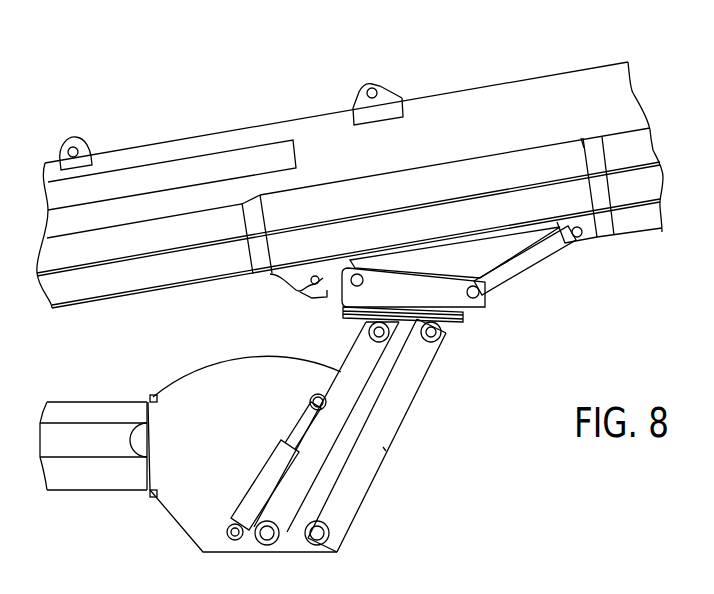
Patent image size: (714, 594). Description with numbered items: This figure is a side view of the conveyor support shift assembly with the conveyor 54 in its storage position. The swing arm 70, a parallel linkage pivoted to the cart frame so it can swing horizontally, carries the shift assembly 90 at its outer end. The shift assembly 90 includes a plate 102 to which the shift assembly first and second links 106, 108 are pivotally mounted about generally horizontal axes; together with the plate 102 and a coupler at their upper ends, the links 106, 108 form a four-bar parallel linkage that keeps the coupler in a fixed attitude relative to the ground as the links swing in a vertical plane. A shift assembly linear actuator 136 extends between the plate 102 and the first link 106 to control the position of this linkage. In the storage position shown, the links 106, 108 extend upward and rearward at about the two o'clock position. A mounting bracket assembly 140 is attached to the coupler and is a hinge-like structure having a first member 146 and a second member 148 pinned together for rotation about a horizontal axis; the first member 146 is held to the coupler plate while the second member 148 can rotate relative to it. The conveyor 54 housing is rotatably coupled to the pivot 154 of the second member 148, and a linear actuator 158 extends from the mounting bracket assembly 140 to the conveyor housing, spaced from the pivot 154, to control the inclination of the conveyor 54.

The conveyor 54 is at (497, 95).
The swing arm 70 is at (75, 498).
The shift assembly 90 is at (377, 508).
The plate 102 is at (205, 387).
The shift assembly first link 106 is at (336, 368).
The shift assembly second link 108 is at (419, 387).
The shift assembly linear actuator 136 is at (255, 487).
The mounting bracket assembly 140 is at (506, 322).
The first member 146 is at (443, 272).
The second member 148 is at (325, 300).
The pivot 154 is at (287, 277).
The linear actuator 158 is at (551, 256).